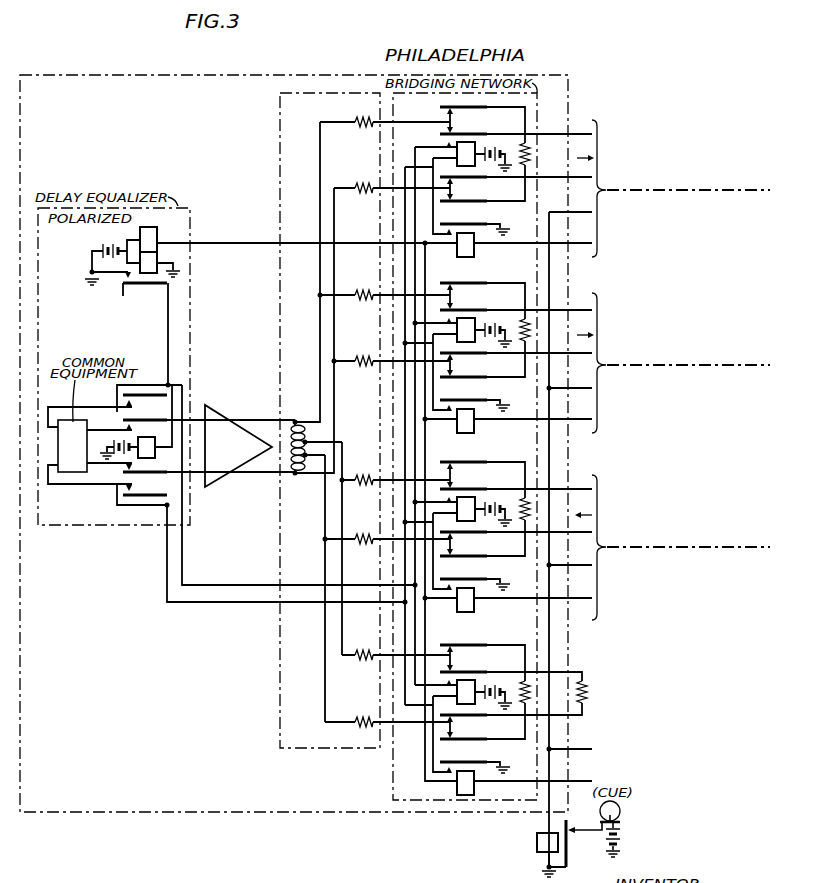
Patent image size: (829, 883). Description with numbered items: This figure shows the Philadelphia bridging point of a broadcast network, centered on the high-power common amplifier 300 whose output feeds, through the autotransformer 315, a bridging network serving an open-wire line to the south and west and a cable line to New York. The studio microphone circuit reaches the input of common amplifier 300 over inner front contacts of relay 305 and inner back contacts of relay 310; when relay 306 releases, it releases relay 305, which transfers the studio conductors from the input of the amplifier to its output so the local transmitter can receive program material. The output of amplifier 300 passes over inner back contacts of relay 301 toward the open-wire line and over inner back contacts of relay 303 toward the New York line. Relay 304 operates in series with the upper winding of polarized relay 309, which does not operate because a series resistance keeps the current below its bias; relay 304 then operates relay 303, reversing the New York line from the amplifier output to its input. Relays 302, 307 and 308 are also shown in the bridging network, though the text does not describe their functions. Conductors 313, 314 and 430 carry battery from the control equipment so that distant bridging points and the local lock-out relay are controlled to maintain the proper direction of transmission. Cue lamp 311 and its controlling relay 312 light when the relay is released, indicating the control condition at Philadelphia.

The common amplifier 300 is at (217, 413).
The relay 301 is at (456, 146).
The relay 302 is at (475, 252).
The relay 303 is at (466, 318).
The relay 304 is at (474, 427).
The relay 305 is at (467, 497).
The relay 306 is at (474, 606).
The polarized relay 307 is at (464, 680).
The relay 308 is at (475, 789).
The polarized relay 309 is at (141, 229).
The relay 310 is at (163, 417).
The cue lamp 311 is at (620, 811).
The controlling relay 312 is at (537, 840).
The conductor 313 is at (578, 212).
The conductor 314 is at (580, 565).
The autotransformer 315 is at (294, 426).
The conductor 430 is at (580, 388).